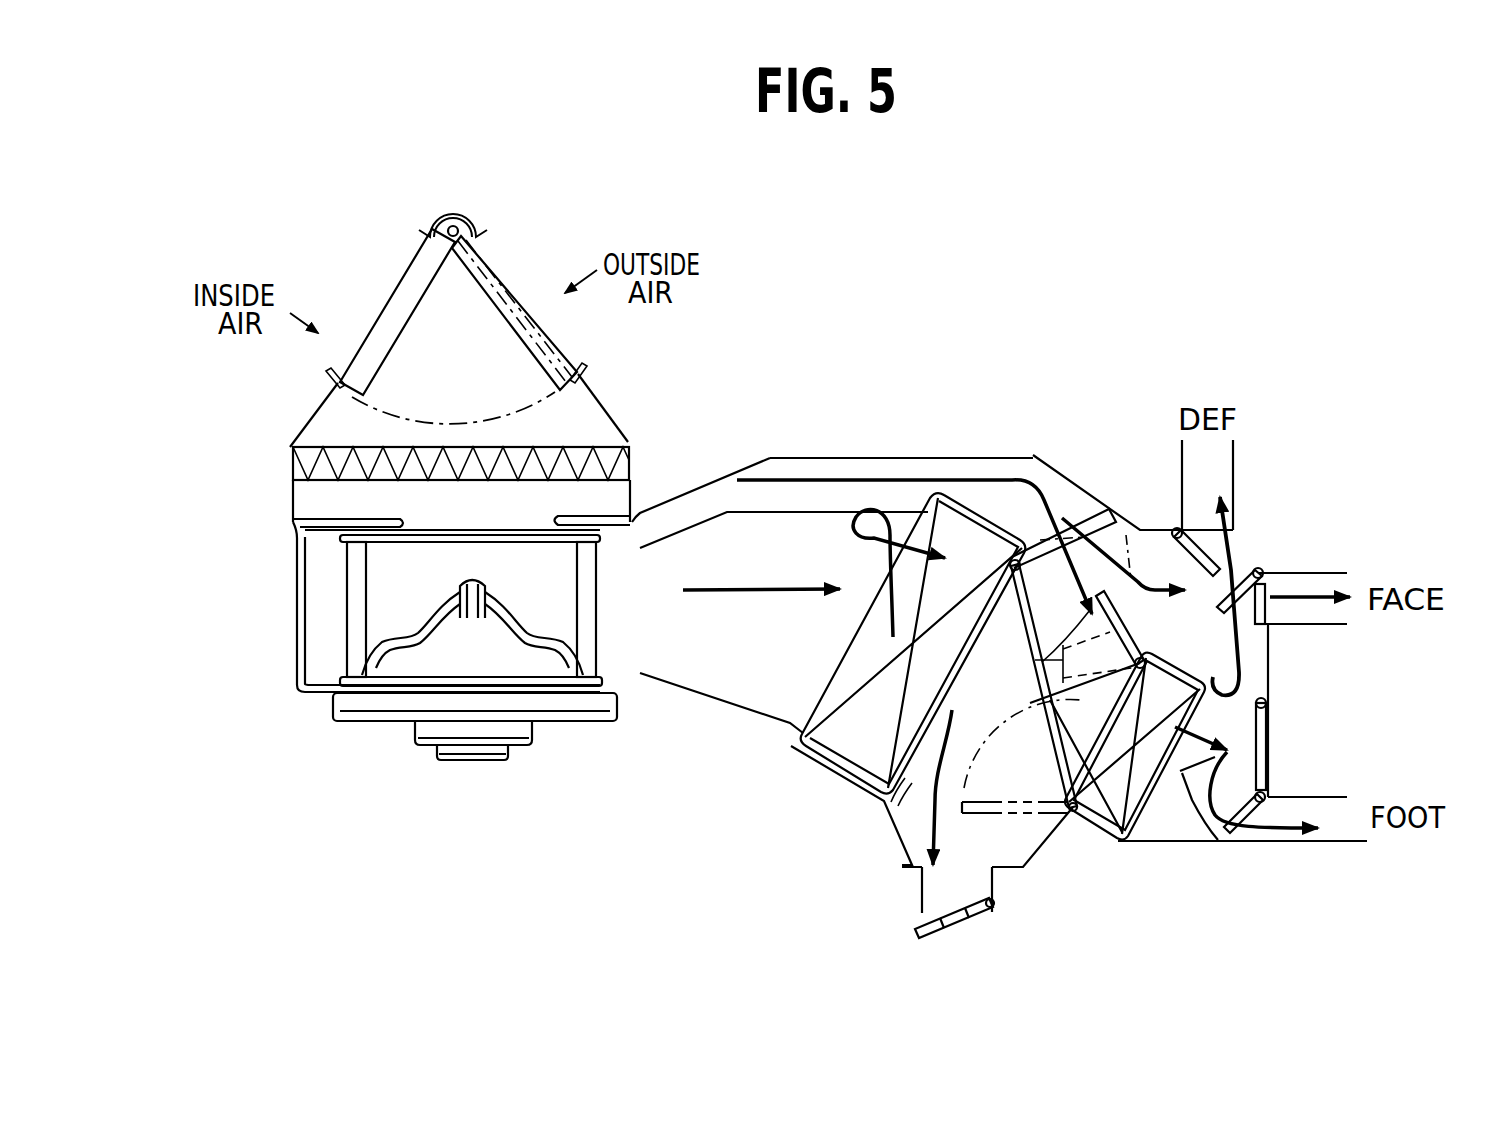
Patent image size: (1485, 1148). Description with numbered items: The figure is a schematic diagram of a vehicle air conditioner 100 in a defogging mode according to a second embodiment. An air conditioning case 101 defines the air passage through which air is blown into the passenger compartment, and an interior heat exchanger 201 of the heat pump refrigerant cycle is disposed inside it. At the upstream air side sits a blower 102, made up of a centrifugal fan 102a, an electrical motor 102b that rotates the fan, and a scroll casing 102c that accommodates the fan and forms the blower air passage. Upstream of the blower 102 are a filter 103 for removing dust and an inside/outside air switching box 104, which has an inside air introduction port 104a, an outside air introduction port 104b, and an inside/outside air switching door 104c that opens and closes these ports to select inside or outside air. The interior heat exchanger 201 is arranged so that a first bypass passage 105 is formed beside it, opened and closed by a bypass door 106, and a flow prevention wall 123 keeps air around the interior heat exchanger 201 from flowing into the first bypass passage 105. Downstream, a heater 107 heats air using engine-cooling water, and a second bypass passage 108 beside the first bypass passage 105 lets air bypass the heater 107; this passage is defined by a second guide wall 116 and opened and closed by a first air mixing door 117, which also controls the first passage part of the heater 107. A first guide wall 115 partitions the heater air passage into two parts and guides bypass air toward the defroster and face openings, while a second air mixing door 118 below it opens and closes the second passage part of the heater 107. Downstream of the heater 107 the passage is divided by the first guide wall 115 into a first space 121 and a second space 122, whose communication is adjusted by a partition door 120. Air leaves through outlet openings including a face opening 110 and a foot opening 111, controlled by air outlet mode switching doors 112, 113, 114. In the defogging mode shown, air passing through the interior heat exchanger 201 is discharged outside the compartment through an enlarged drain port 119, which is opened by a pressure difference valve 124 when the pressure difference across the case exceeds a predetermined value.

The vehicle air conditioner 100 is at (878, 370).
The air conditioning case 101 is at (745, 463).
The blower 102 is at (363, 713).
The centrifugal fan 102a is at (588, 627).
The electrical motor 102b is at (533, 740).
The scroll casing 102c is at (298, 652).
The filter 103 is at (626, 442).
The inside/outside air switching box 104 is at (600, 408).
The inside air introduction port 104a is at (350, 292).
The outside air introduction port 104b is at (496, 239).
The inside/outside air switching door 104c is at (418, 250).
The first bypass passage 105 is at (977, 500).
The bypass door 106 is at (1063, 520).
The heater 107 is at (1130, 812).
The second bypass passage 108 is at (1170, 580).
The face opening 110 is at (1303, 585).
The foot opening 111 is at (1323, 838).
The air outlet mode switching door 112 is at (1233, 530).
The air outlet mode switching door 113 is at (1263, 613).
The air outlet mode switching door 114 is at (1240, 790).
The first guide wall 115 is at (1040, 707).
The second guide wall 116 is at (1110, 530).
The first air mixing door 117 is at (1100, 512).
The second air mixing door 118 is at (1033, 828).
The drain port 119 is at (937, 887).
The partition door 120 is at (1262, 745).
The first space 121 is at (1255, 678).
The second space 122 is at (1215, 845).
The flow prevention wall 123 is at (790, 513).
The pressure difference valve 124 is at (920, 915).
The interior heat exchanger 201 is at (845, 740).